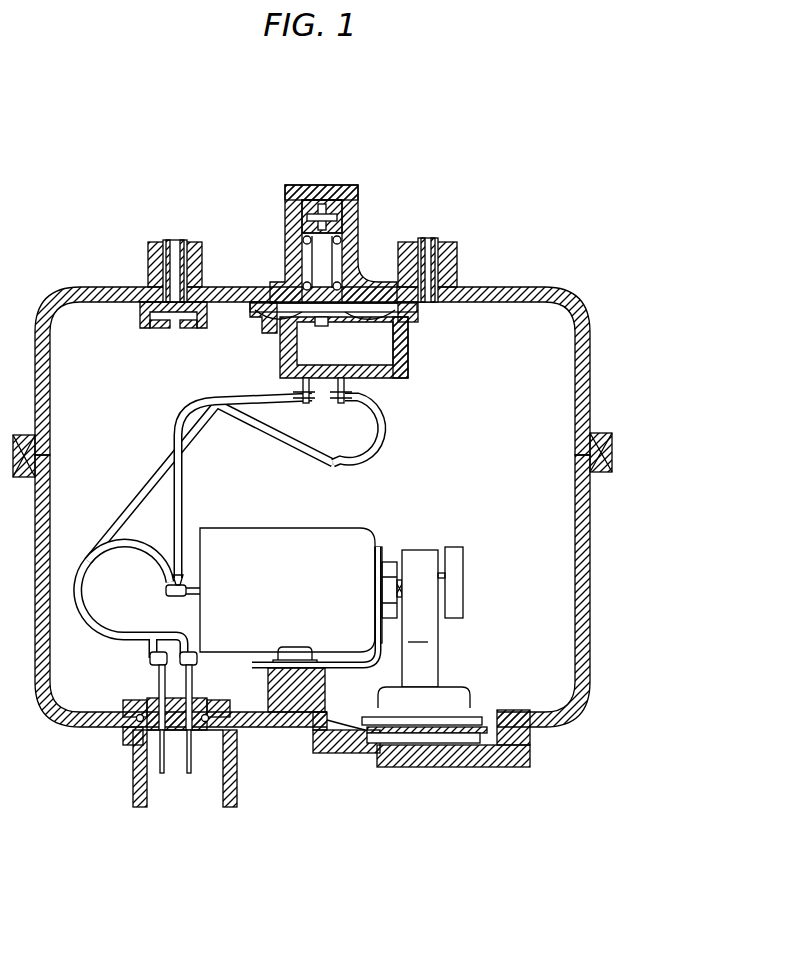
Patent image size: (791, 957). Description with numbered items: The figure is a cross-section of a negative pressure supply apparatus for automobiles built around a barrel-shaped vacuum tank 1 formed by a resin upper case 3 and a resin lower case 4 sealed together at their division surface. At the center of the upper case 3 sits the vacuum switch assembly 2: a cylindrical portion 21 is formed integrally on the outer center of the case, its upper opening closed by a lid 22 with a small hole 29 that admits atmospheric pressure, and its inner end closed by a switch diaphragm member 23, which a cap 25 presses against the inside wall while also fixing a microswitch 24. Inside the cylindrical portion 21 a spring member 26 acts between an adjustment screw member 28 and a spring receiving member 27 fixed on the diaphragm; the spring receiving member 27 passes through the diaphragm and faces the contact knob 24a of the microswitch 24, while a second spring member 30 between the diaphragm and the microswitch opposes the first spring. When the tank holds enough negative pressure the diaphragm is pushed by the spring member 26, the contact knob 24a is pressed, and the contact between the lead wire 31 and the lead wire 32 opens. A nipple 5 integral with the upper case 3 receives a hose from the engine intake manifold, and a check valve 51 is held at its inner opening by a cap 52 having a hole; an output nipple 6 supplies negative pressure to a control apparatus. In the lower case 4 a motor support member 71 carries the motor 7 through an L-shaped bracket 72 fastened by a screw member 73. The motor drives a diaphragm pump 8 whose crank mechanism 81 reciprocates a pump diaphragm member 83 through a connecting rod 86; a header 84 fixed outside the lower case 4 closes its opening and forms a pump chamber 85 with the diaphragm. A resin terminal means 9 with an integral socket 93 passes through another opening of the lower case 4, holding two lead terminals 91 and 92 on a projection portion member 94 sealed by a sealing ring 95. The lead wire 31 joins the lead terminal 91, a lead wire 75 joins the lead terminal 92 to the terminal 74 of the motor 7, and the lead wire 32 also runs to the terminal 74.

The vacuum tank 1 is at (336, 507).
The vacuum switch assembly 2 is at (348, 273).
The upper case 3 is at (589, 362).
The lower case 4 is at (580, 592).
The nipple 5 is at (145, 285).
The output nipple 6 is at (430, 240).
The motor 7 is at (271, 633).
The diaphragm pump 8 is at (421, 661).
The terminal means 9 is at (156, 750).
The cylindrical portion 21 is at (358, 215).
The lid 22 is at (325, 190).
The switch diaphragm member 23 is at (275, 305).
The microswitch 24 is at (396, 355).
The contact knob 24a is at (322, 327).
The cap 25 is at (402, 336).
The spring member 26 is at (305, 258).
The spring receiving member 27 is at (325, 305).
The adjustment screw member 28 is at (302, 225).
The small hole 29 is at (312, 202).
The spring member 30 is at (270, 332).
The lead wire 31 is at (237, 395).
The lead wire 32 is at (390, 430).
The check valve 51 is at (162, 330).
The cap 52 is at (142, 318).
The motor support member 71 is at (292, 725).
The L-shaped bracket 72 is at (368, 670).
The screw member 73 is at (280, 648).
The terminal 74 is at (186, 598).
The lead wire 75 is at (123, 548).
The crank mechanism 81 is at (420, 548).
The pump diaphragm member 83 is at (487, 722).
The header 84 is at (472, 757).
The pump chamber 85 is at (356, 752).
The connecting rod 86 is at (432, 672).
The lead terminal 91 is at (191, 775).
The lead terminal 92 is at (166, 775).
The socket 93 is at (125, 738).
The projection portion member 94 is at (198, 705).
The sealing ring 95 is at (126, 705).